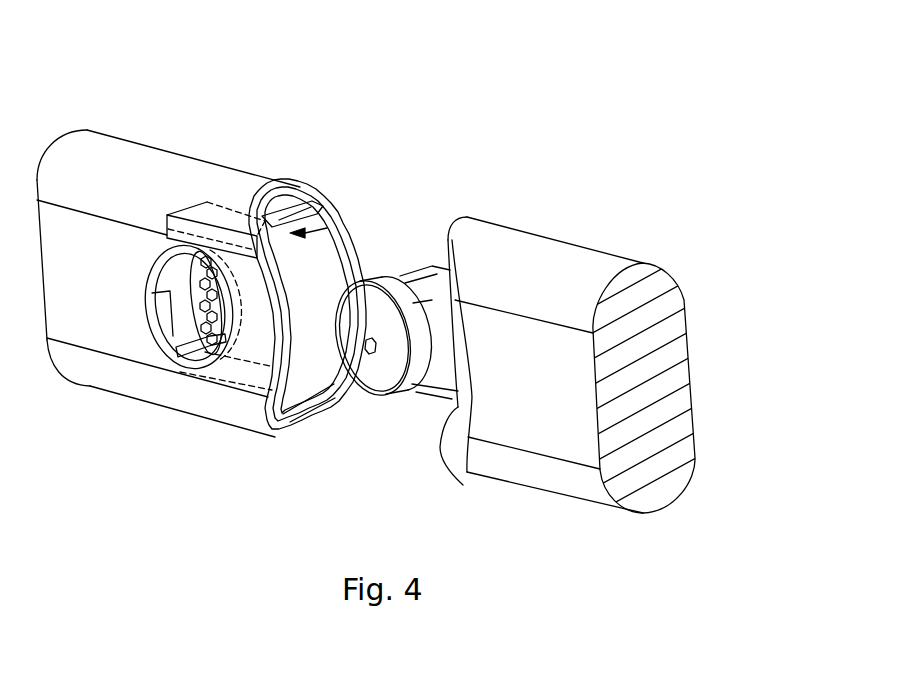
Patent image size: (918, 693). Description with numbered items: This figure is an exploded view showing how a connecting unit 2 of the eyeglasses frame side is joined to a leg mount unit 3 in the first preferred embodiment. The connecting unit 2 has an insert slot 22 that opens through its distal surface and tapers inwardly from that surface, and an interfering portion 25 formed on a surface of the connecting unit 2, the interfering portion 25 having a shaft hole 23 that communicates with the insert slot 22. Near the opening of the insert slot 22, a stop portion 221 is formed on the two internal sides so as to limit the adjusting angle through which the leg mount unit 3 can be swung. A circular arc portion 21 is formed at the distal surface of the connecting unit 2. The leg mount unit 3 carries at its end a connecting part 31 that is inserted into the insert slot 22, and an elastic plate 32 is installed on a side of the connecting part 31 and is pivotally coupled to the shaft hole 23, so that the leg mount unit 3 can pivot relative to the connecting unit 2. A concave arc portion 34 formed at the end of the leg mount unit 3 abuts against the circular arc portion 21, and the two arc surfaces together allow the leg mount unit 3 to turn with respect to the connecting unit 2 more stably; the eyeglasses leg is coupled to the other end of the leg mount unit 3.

The connecting unit 2 is at (218, 135).
The circular arc portion 21 is at (287, 196).
The insert slot 22 is at (344, 207).
The stop portion 221 is at (298, 400).
The shaft hole 23 is at (178, 372).
The interfering portion 25 is at (221, 265).
The leg mount unit 3 is at (592, 222).
The connecting part 31 is at (447, 293).
The elastic plate 32 is at (383, 392).
The concave arc portion 34 is at (463, 485).